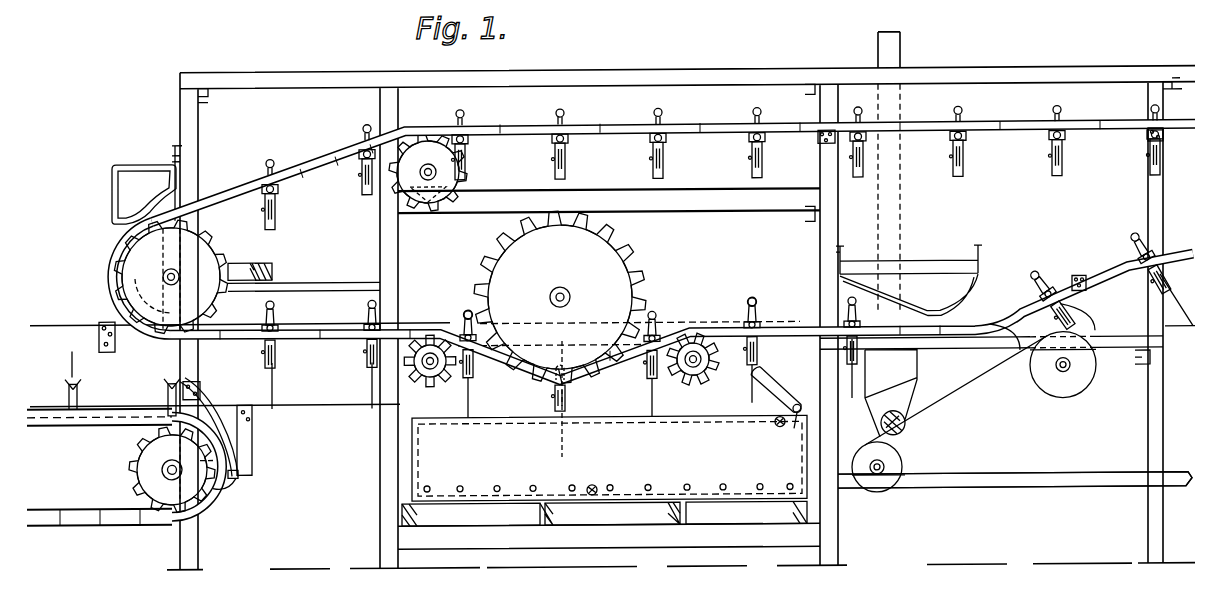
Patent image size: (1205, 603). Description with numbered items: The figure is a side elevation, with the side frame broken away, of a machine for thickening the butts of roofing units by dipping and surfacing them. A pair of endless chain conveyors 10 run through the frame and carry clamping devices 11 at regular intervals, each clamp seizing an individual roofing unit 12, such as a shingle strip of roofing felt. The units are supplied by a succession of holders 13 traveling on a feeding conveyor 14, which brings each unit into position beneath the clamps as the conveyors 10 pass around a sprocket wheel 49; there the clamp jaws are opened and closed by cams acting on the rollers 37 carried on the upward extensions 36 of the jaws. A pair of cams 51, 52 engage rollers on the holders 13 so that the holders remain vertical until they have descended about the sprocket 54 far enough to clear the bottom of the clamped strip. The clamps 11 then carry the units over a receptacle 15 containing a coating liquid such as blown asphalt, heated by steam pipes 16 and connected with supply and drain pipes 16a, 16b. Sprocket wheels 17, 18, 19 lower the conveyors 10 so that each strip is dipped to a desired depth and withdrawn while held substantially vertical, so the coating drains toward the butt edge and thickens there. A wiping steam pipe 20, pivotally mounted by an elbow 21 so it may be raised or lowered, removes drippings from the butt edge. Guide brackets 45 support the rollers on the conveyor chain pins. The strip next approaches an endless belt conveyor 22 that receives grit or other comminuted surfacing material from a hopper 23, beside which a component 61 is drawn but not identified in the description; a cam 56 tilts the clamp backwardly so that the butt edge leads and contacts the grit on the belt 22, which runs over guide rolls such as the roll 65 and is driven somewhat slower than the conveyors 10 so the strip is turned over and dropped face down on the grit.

The endless conveyors 10 is at (311, 163).
The clamping devices 11 is at (764, 169).
The roofing units 12 is at (72, 357).
The holders 13 is at (80, 395).
The conveyor 14 is at (48, 428).
The receptacle 15 is at (478, 438).
The steam pipes 16 is at (462, 503).
The supply pipe 16a is at (777, 432).
The drain pipe 16b is at (593, 488).
The sprocket wheel 17 is at (440, 382).
The sprocket wheel 18 is at (528, 251).
The sprocket wheel 19 is at (700, 382).
The steam pipe 20 is at (761, 381).
The elbow 21 is at (793, 436).
The conveyor 22 is at (978, 385).
The hopper 23 is at (890, 379).
The extensions 36 is at (462, 325).
The rollers 37 is at (466, 313).
The guide brackets 45 is at (817, 141).
The sprocket wheel 49 is at (212, 240).
The cam 51 is at (240, 482).
The cam 52 is at (232, 450).
The sprocket 54 is at (140, 472).
The cam 56 is at (915, 315).
The brush roller 61 is at (950, 400).
The guide roll 65 is at (880, 493).